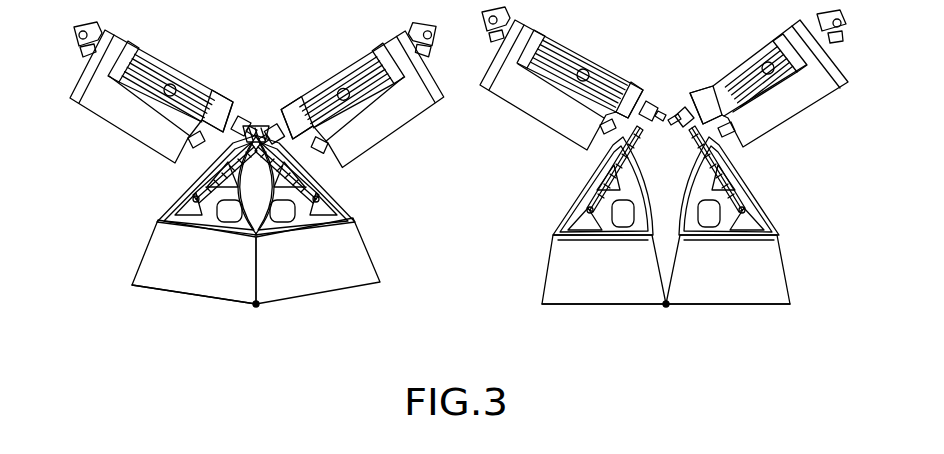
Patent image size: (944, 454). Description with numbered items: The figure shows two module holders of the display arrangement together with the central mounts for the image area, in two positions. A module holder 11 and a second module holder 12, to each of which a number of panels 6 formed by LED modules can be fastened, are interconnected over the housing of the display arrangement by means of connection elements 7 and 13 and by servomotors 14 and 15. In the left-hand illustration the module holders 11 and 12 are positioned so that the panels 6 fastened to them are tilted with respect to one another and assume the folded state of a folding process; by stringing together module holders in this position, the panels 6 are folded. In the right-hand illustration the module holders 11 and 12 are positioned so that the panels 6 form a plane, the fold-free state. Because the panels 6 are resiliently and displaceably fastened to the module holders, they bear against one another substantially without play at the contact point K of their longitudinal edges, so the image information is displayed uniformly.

The panel 6 is at (318, 295).
The connection element 7 is at (207, 182).
The module holder 11 is at (185, 262).
The second module holder 12 is at (343, 268).
The connection element 13 is at (297, 183).
The servomotor 14 is at (188, 97).
The servomotor 15 is at (322, 96).
The contact point K is at (256, 304).